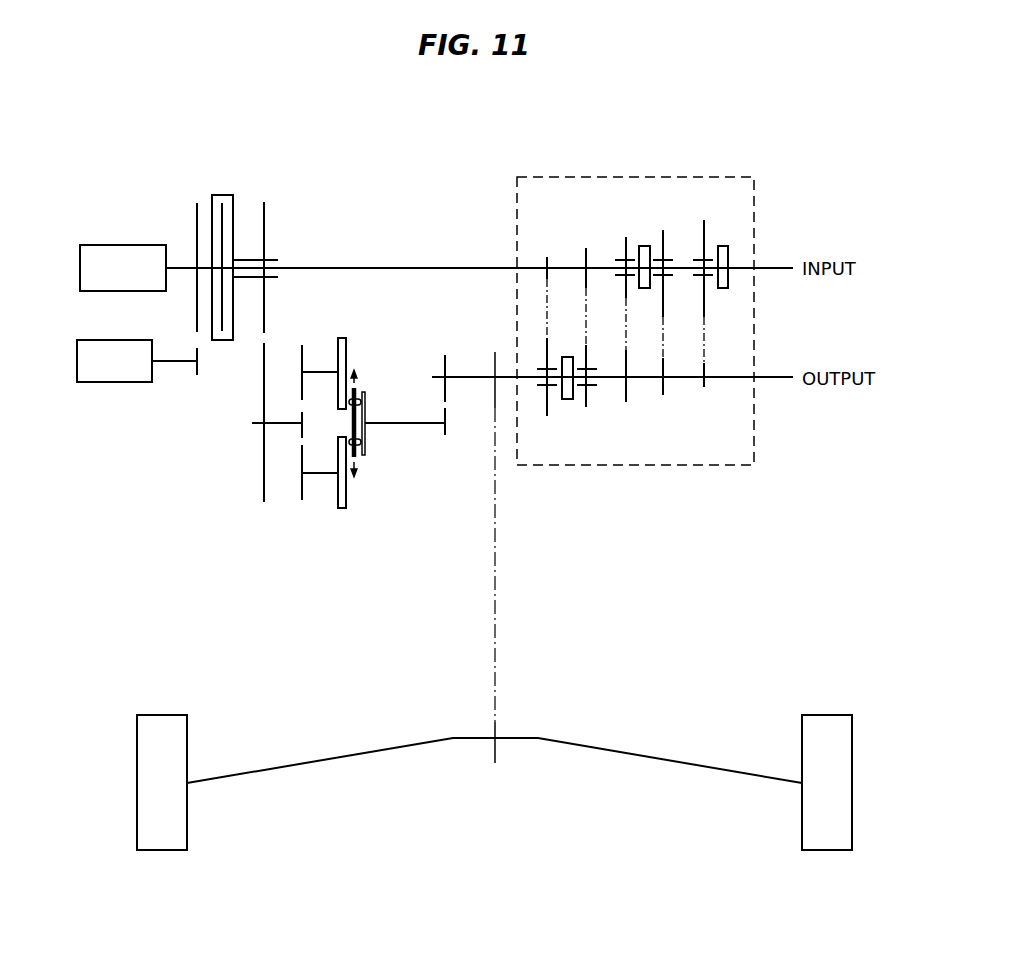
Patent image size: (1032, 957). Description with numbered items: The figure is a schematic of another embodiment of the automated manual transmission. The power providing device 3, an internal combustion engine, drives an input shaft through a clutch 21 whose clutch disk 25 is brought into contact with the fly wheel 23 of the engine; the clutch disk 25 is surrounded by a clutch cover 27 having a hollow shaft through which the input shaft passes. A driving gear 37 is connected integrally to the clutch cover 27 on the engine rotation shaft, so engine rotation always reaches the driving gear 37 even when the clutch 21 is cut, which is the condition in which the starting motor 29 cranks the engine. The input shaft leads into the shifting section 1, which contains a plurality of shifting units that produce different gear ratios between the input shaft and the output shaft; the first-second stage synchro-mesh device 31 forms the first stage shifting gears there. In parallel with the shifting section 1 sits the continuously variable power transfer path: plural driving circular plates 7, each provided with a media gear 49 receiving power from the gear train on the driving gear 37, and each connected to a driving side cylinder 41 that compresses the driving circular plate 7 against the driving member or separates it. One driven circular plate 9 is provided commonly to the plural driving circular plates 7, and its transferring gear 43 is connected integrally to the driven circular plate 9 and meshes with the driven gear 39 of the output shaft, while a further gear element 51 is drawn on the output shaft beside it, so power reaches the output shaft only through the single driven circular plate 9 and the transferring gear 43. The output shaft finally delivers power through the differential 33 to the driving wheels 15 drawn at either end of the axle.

The shifting section 1 is at (722, 465).
The power providing device 3 is at (93, 250).
The driving circular plate 7 is at (346, 345).
The driven circular plate 9 is at (366, 394).
The wheel 15 is at (163, 722).
The clutch 21 is at (216, 178).
The fly wheel 23 is at (197, 212).
The clutch disk 25 is at (220, 203).
The clutch cover 27 is at (233, 212).
The starting motor 29 is at (113, 383).
The first-second stage synchro-mesh device 31 is at (565, 400).
The differential 33 is at (457, 714).
The driving gear 37 is at (266, 210).
The driven gear 39 is at (262, 463).
The driving side cylinder 41 is at (338, 347).
The transferring gear 43 is at (447, 437).
The media gear 49 is at (300, 390).
The gear 51 is at (447, 360).